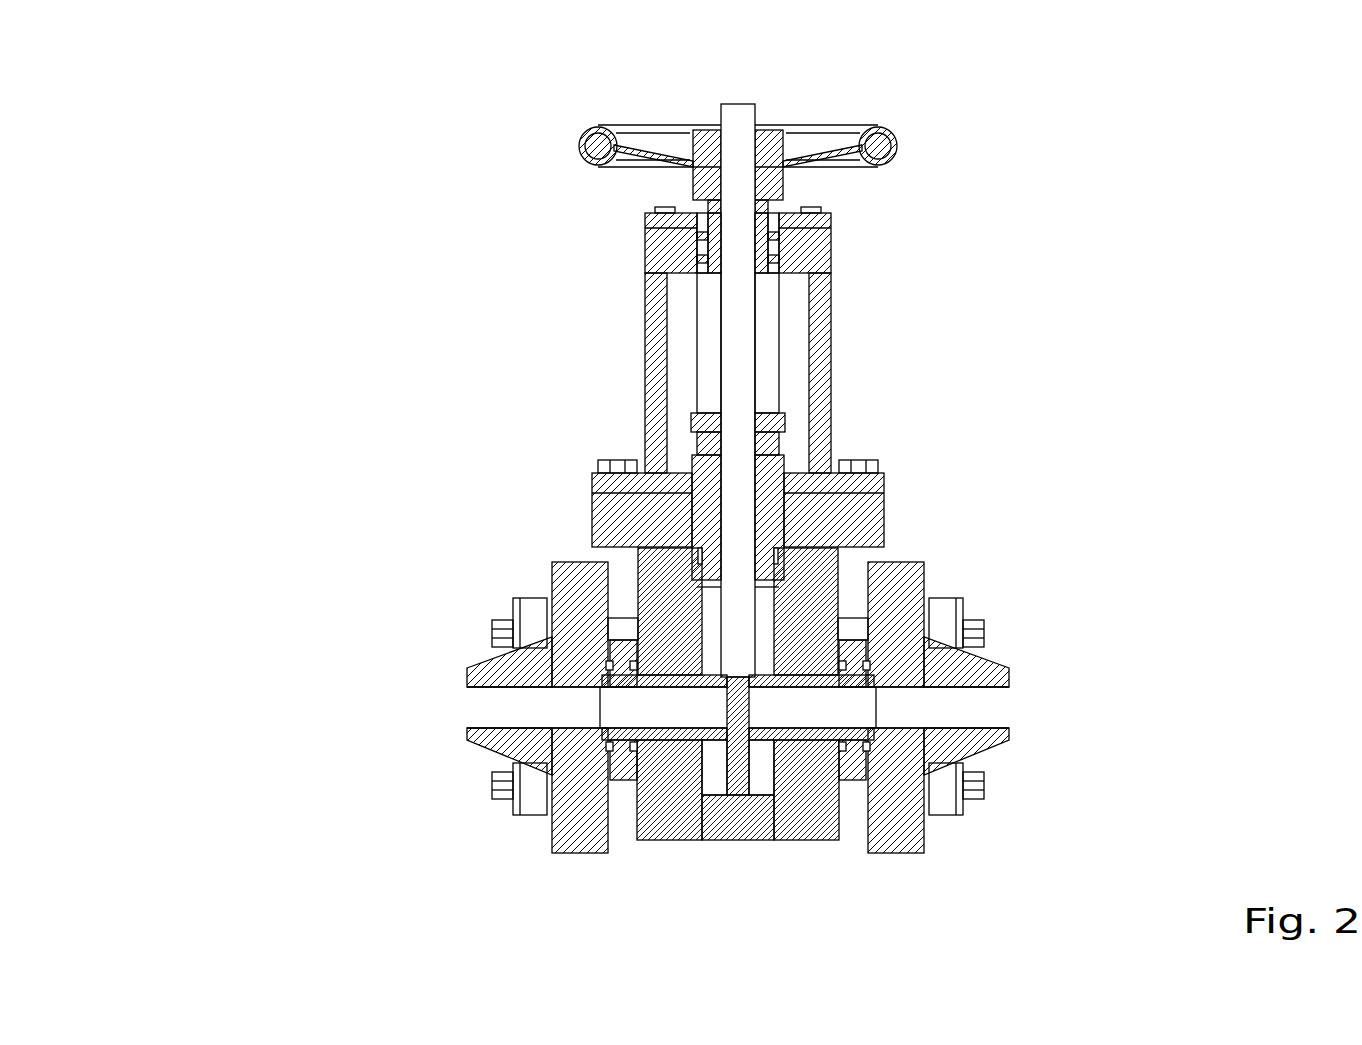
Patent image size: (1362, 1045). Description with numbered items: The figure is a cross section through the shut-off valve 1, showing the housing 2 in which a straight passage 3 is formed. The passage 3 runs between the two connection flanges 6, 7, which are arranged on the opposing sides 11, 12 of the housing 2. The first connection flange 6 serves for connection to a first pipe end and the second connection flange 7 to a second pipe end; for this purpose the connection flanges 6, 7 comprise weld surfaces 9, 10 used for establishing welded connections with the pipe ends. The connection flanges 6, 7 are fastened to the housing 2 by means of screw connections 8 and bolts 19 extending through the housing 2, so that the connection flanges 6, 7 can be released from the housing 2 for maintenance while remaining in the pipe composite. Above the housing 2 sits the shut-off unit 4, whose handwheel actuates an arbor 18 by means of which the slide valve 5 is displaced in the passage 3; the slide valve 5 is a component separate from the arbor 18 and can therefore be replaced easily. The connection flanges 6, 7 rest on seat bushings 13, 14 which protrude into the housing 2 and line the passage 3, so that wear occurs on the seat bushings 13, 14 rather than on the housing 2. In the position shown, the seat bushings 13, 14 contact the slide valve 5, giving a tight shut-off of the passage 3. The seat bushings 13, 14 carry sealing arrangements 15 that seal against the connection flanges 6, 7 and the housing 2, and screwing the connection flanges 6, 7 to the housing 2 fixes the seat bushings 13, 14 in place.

The shut-off valve 1 is at (147, 108).
The housing 2 is at (818, 572).
The passage 3 is at (684, 715).
The shut-off unit 4 is at (927, 124).
The slide valve 5 is at (737, 712).
The first connection flange 6 is at (985, 740).
The second connection flange 7 is at (482, 745).
The screw connections 8 is at (535, 790).
The weld surface 9 is at (992, 668).
The weld surface 10 is at (478, 672).
The side of the housing 11 is at (843, 568).
The side of the housing 12 is at (630, 572).
The seat bushing 13 is at (855, 752).
The seat bushing 14 is at (620, 765).
The sealing arrangements 15 is at (631, 744).
The arbor 18 is at (743, 308).
The bolts 19 is at (626, 627).